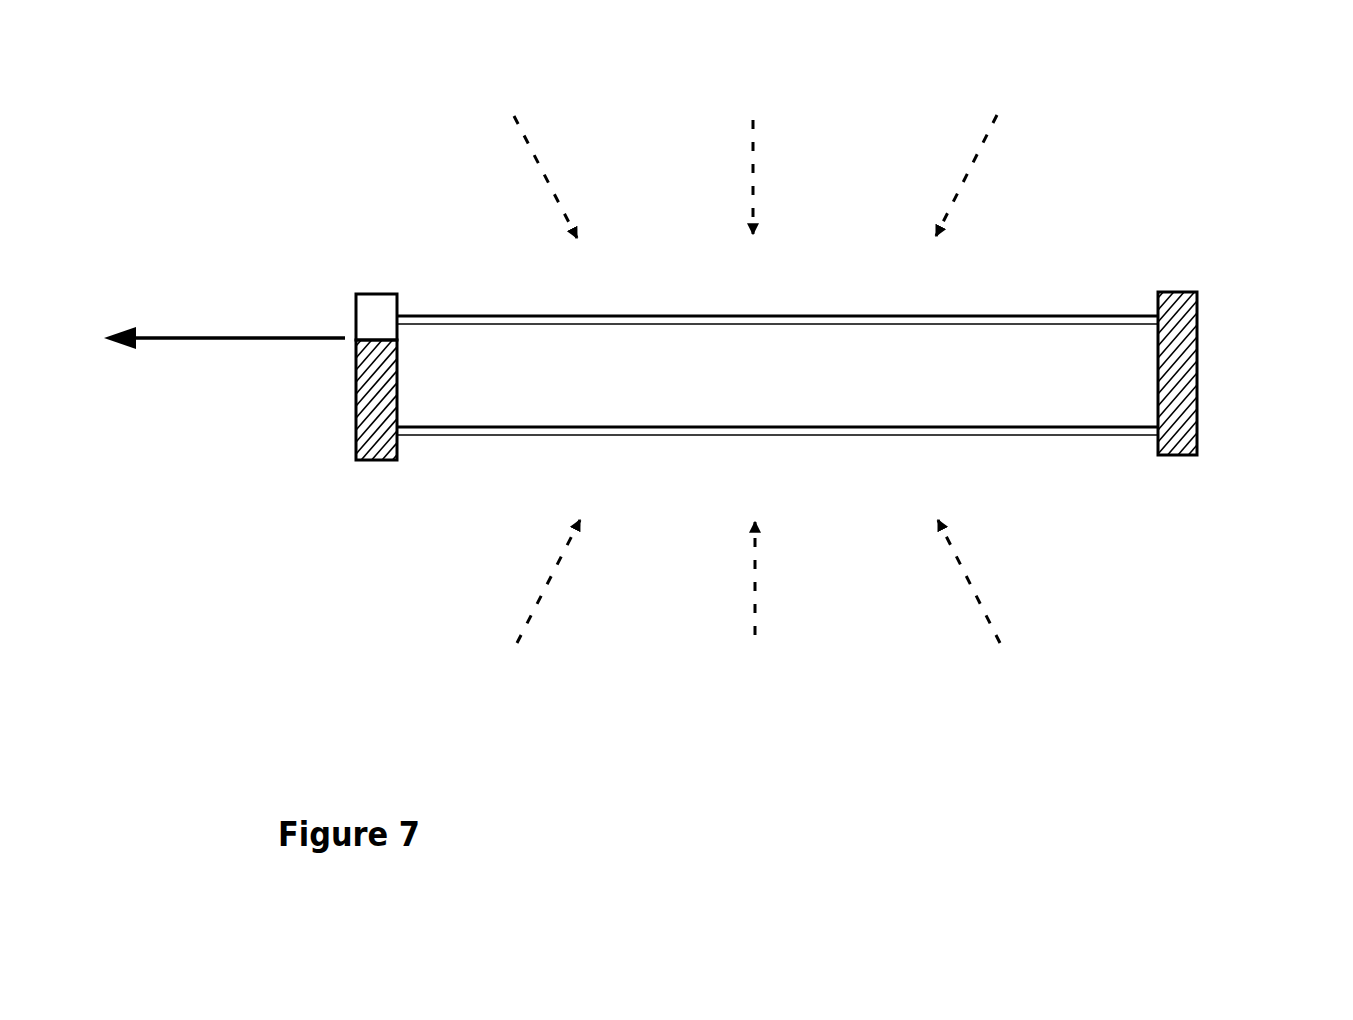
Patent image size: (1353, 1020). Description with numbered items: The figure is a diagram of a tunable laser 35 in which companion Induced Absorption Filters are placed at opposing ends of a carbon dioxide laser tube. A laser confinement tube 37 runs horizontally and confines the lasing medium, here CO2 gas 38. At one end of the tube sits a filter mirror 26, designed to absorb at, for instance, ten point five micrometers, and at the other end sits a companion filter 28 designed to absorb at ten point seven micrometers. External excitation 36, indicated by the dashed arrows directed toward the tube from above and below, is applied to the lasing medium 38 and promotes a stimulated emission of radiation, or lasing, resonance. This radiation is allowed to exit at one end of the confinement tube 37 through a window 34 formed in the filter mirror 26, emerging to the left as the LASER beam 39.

The filter mirror 26 is at (366, 445).
The companion filter 28 is at (1187, 443).
The window 34 is at (368, 317).
The tunable laser 35 is at (1100, 194).
The excitation 36 is at (757, 400).
The laser confinement tube 37 is at (1072, 435).
The lasing medium 38 is at (1067, 362).
The LASER beam 39 is at (224, 338).